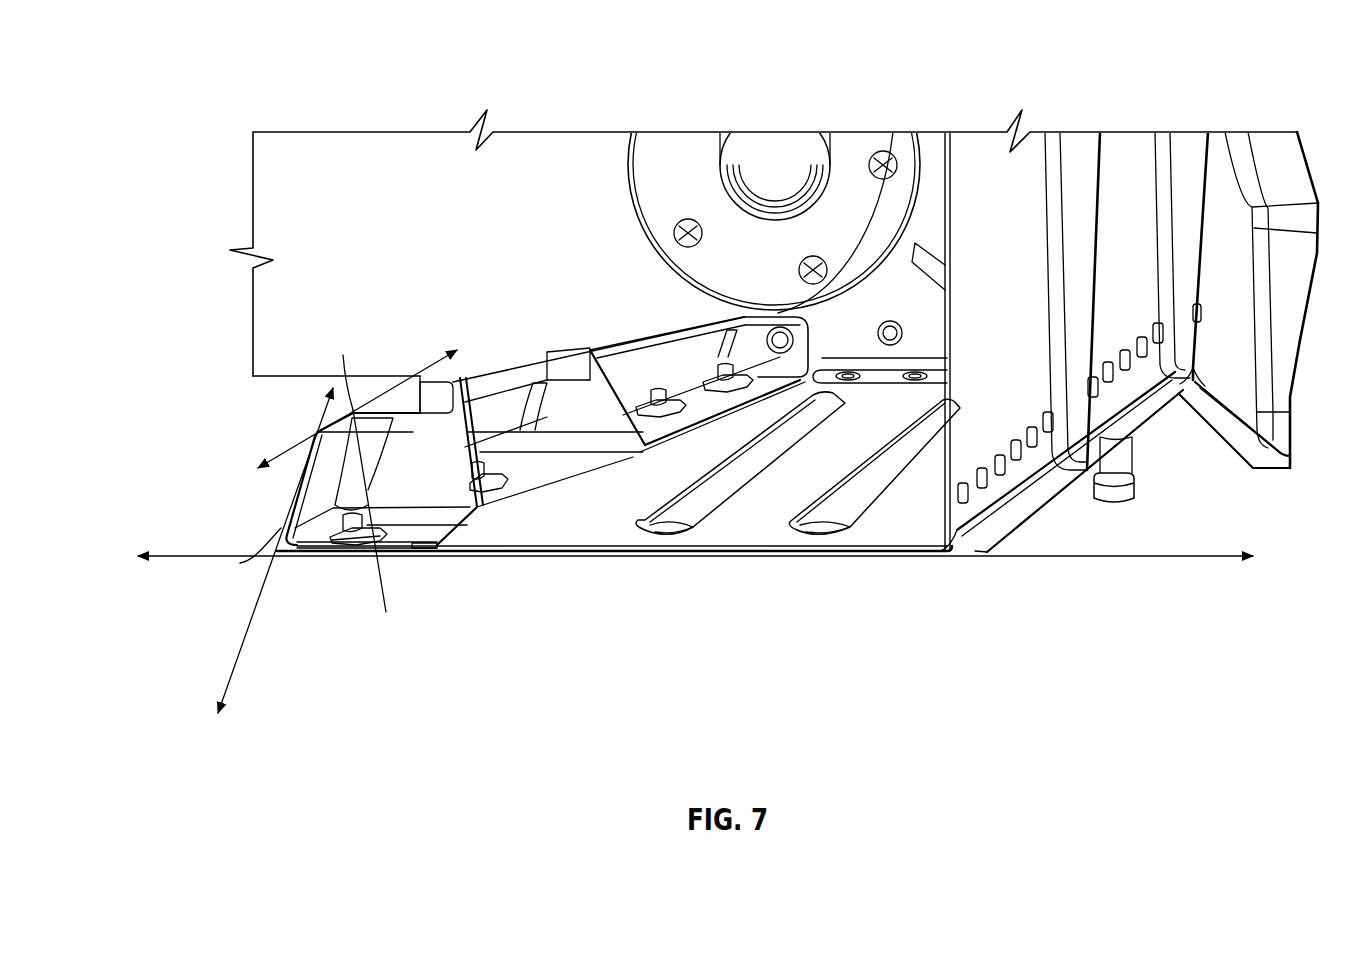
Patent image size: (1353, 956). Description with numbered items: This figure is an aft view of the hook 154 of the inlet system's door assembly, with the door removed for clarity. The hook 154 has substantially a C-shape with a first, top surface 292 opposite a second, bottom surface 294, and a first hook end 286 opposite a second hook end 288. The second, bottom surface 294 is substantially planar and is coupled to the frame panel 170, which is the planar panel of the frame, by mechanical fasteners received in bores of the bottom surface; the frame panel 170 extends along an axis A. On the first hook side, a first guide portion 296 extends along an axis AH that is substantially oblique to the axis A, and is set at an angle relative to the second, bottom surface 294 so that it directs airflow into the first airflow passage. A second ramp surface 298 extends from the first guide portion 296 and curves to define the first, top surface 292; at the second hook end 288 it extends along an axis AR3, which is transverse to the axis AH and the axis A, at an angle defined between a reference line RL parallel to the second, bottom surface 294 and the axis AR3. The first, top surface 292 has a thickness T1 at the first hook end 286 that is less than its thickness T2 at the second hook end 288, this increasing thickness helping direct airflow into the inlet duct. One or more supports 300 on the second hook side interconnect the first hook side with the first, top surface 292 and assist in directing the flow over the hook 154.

The hook 154 is at (177, 538).
The frame panel 170 is at (813, 535).
The first hook end 286 is at (812, 300).
The second hook end 288 is at (338, 553).
The first, top surface 292 is at (620, 340).
The second, bottom surface 294 is at (506, 508).
The first guide portion 296 is at (290, 515).
The second ramp surface 298 is at (282, 336).
The supports 300 is at (453, 487).
The thickness T1 is at (812, 262).
The thickness T2 is at (432, 410).
The axis AR3 is at (300, 438).
The reference line RL is at (379, 529).
The axis AH is at (240, 663).
The axis A is at (1027, 558).